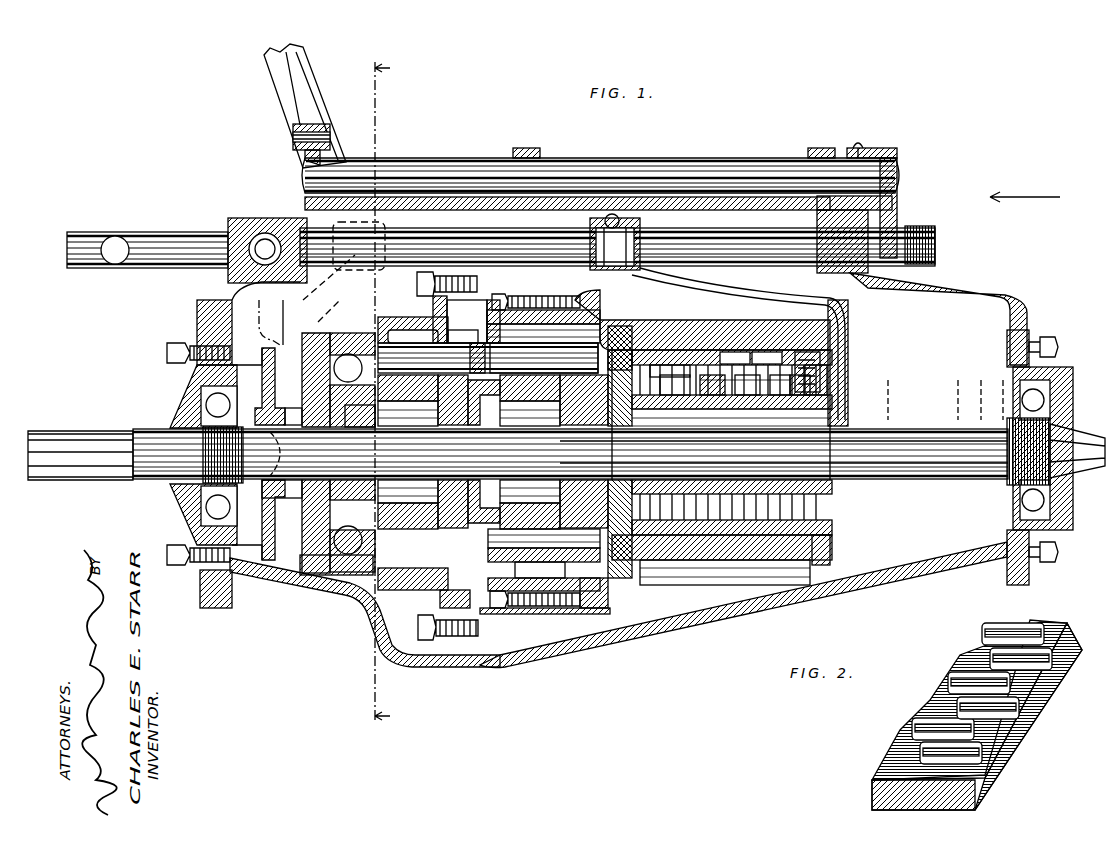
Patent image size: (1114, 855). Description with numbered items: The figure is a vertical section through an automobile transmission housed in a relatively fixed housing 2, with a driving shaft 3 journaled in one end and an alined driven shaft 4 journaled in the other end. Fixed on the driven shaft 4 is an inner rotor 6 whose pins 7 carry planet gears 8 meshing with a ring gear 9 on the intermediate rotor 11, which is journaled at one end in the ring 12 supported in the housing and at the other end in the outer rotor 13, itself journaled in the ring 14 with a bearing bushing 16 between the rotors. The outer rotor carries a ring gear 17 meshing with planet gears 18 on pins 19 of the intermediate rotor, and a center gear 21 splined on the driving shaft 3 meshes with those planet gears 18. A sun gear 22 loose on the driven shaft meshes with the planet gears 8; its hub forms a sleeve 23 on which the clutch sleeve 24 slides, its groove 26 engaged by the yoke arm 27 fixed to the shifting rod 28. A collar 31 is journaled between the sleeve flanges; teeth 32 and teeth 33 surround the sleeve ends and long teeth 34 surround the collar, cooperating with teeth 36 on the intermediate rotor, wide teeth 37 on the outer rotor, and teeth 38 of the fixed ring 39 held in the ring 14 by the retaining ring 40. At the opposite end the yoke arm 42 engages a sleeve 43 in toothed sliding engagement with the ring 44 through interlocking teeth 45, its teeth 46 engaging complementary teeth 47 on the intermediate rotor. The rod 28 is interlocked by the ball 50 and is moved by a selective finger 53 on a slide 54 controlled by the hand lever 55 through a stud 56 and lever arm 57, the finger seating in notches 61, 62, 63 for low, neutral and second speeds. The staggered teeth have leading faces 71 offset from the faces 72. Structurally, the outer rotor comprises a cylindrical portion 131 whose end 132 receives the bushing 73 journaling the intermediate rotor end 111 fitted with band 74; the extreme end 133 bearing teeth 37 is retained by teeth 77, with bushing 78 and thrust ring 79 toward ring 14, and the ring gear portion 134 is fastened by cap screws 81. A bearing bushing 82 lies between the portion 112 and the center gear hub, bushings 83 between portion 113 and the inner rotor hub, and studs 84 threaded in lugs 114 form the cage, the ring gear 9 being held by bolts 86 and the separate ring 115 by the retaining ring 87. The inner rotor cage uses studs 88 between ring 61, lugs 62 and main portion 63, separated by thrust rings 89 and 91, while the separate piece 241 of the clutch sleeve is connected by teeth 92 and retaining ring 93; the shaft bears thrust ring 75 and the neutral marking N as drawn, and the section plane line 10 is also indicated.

In FIG. 1, the housing 2 is at (936, 420).
In FIG. 1, the driving shaft 3 is at (125, 442).
In FIG. 1, the driven shaft 4 is at (903, 508).
In FIG. 1, the inner rotor 6 is at (488, 406).
In FIG. 1, the pins 7 is at (544, 358).
In FIG. 1, the planet gears 8 is at (565, 325).
In FIG. 1, the ring gear 9 is at (546, 294).
In FIG. 1, the section line 10 is at (395, 392).
In FIG. 1, the intermediate rotor 11 is at (490, 328).
In FIG. 1, the ring 12 is at (320, 345).
In FIG. 1, the outer rotor 13 is at (636, 320).
In FIG. 1, the ring 14 is at (770, 362).
In FIG. 1, the bearing bushing 16 is at (380, 348).
In FIG. 1, the ring gear 17 is at (452, 338).
In FIG. 1, the planet gears 18 is at (423, 330).
In FIG. 1, the pins 19 is at (488, 358).
In FIG. 1, the center gear 21 is at (420, 404).
In FIG. 1, the sun gear 22 is at (548, 400).
In FIG. 1, the sleeve 23 is at (628, 410).
In FIG. 1, the clutch sleeve 24 is at (672, 395).
In FIG. 1, the separate piece 241 is at (815, 395).
In FIG. 1, the groove 26 is at (835, 500).
In FIG. 1, the yoke arm 27 is at (842, 335).
In FIG. 1, the shifting rod 28 is at (617, 268).
In FIG. 1, the collar 31 is at (740, 395).
In FIG. 1, the teeth 32 is at (613, 359).
In FIG. 1, the teeth 33 is at (772, 390).
In FIG. 1, the long teeth 34 is at (648, 380).
In FIG. 1, the teeth 36 is at (705, 395).
In FIG. 2, the teeth 36 is at (1015, 622).
In FIG. 1, the wide teeth 37 is at (745, 362).
In FIG. 1, the teeth 38 is at (808, 355).
In FIG. 1, the fixed ring 39 is at (842, 362).
In FIG. 1, the retaining ring 40 is at (830, 556).
In FIG. 1, the yoke arm 42 is at (263, 362).
In FIG. 1, the sleeve 43 is at (275, 498).
In FIG. 1, the ring 44 is at (300, 540).
In FIG. 1, the interlocking teeth 45 is at (300, 556).
In FIG. 1, the teeth 46 is at (290, 408).
In FIG. 1, the complementary teeth 47 is at (360, 416).
In FIG. 1, the ball 50 is at (265, 238).
In FIG. 1, the selective finger 53 is at (900, 202).
In FIG. 1, the slide 54 is at (718, 165).
In FIG. 1, the hand lever 55 is at (308, 90).
In FIG. 1, the stud 56 is at (326, 126).
In FIG. 1, the lever arm 57 is at (298, 122).
In FIG. 1, the notch 61 is at (617, 529).
In FIG. 1, the notch 62 is at (535, 562).
In FIG. 1, the notch 63 is at (505, 515).
In FIG. 2, the leading face 71 is at (912, 727).
In FIG. 2, the faces 72 is at (918, 752).
In FIG. 1, the bushing 73 is at (625, 585).
In FIG. 1, the band 74 is at (648, 575).
In FIG. 1, the ring 75 is at (594, 605).
In FIG. 1, the teeth 77 is at (745, 578).
In FIG. 1, the bushing 78 is at (800, 575).
In FIG. 1, the thrust ring 79 is at (775, 575).
In FIG. 1, the cap screws 81 is at (418, 627).
In FIG. 1, the bearing bushing 82 is at (407, 411).
In FIG. 1, the bushings 83 is at (480, 405).
In FIG. 1, the studs 84 is at (345, 578).
In FIG. 1, the bolts 86 is at (545, 614).
In FIG. 1, the retaining ring 87 is at (688, 578).
In FIG. 1, the studs 88 is at (584, 515).
In FIG. 1, the thrust ring 89 is at (492, 578).
In FIG. 1, the thrust ring 91 is at (594, 593).
In FIG. 1, the teeth 92 is at (796, 395).
In FIG. 1, the retaining ring 93 is at (619, 457).
In FIG. 1, the end portion of intermediate rotor 111 is at (628, 543).
In FIG. 1, the portion of intermediate rotor 112 is at (423, 535).
In FIG. 1, the portion of intermediate rotor 113 is at (469, 605).
In FIG. 1, the lugs 114 is at (417, 603).
In FIG. 1, the separate ring 115 is at (650, 540).
In FIG. 1, the cylindrical portion 131 is at (500, 614).
In FIG. 1, the end of outer rotor 132 is at (665, 585).
In FIG. 1, the extreme end of outer rotor 133 is at (712, 582).
In FIG. 1, the ring gear portion 134 is at (421, 600).
In FIG. 1, the neutral position line N is at (271, 314).